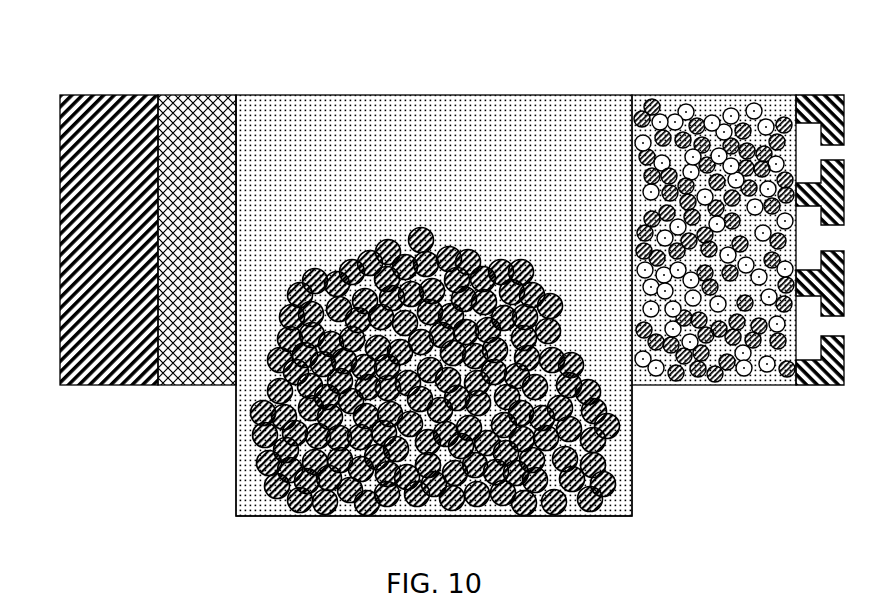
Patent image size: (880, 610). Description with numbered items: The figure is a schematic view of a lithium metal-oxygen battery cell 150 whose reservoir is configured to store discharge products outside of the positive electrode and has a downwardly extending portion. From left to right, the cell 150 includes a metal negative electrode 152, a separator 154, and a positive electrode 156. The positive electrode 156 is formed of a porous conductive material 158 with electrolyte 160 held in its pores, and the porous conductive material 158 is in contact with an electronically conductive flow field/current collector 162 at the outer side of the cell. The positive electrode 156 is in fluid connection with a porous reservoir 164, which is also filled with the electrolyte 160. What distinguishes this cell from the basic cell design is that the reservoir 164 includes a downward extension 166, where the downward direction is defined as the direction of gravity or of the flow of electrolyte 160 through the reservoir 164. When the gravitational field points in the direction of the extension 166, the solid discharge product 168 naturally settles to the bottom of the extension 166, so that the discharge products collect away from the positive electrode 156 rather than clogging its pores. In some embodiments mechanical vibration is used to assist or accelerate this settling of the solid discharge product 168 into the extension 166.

The battery cell 150 is at (108, 47).
The metal negative electrode 152 is at (145, 87).
The separator 154 is at (222, 87).
The positive electrode 156 is at (668, 66).
The porous conductive material 158 is at (740, 87).
The electrolyte 160 is at (290, 92).
The flow field/current collector 162 is at (800, 87).
The porous reservoir 164 is at (505, 87).
The downward extension 166 is at (625, 418).
The solid discharge product 168 is at (413, 221).